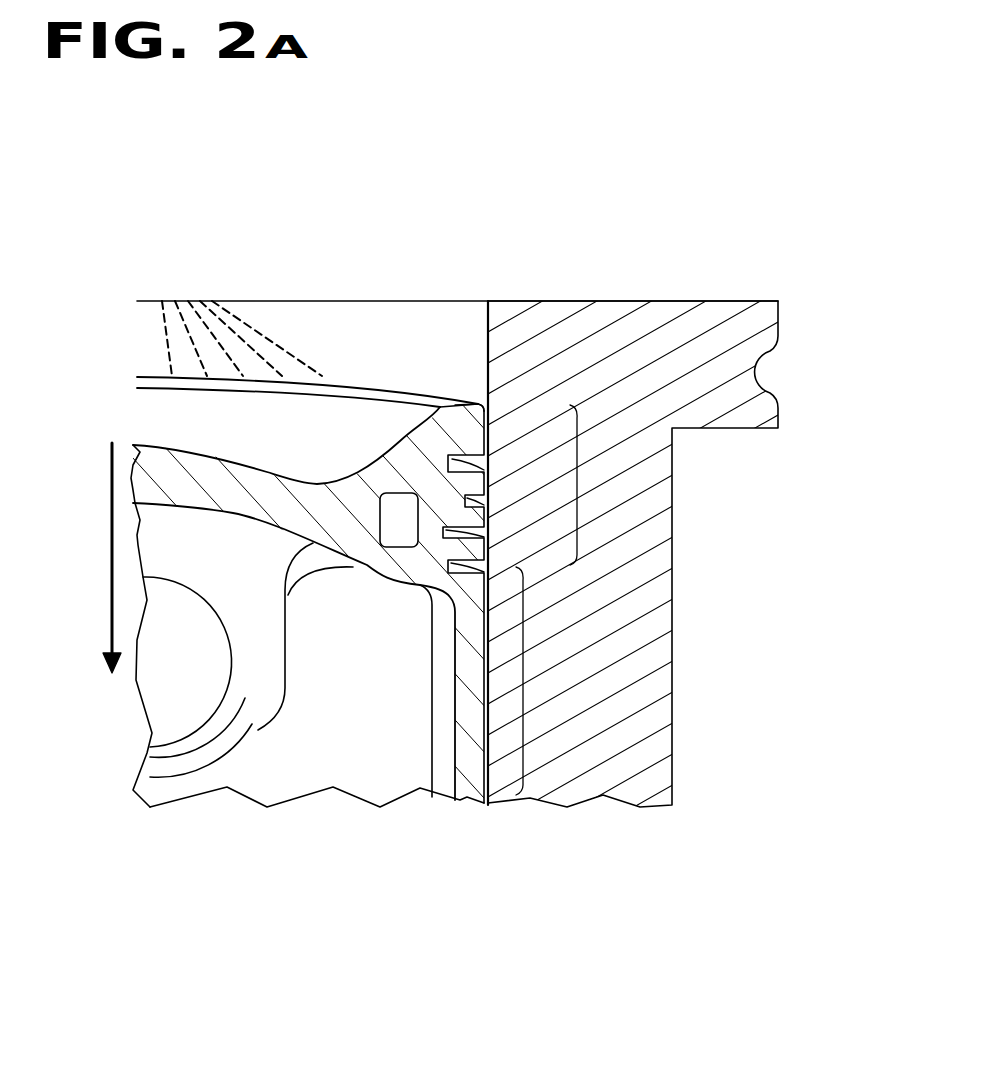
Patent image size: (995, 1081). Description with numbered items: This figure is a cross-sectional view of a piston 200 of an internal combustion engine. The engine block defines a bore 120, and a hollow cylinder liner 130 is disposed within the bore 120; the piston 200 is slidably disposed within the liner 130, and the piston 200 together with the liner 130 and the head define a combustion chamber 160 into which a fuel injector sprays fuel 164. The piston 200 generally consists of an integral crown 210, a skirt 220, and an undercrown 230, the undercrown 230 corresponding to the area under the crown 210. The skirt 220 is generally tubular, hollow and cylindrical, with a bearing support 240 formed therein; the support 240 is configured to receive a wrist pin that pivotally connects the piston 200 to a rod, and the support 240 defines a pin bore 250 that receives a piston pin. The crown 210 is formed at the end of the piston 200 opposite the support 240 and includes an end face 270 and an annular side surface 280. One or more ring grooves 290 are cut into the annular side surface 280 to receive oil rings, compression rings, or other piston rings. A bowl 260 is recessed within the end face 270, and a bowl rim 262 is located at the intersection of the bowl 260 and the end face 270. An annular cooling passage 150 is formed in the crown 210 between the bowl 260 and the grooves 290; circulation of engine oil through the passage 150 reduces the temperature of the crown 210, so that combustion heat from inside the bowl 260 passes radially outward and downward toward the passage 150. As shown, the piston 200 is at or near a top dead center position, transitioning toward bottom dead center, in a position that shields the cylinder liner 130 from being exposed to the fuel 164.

The bore 120 is at (487, 342).
The cylinder liner 130 is at (593, 394).
The annular cooling passage 150 is at (390, 508).
The combustion chamber 160 is at (291, 334).
The fuel 164 is at (259, 306).
The piston 200 is at (391, 852).
The crown 210 is at (577, 473).
The skirt 220 is at (524, 634).
The undercrown 230 is at (368, 578).
The bearing support 240 is at (282, 692).
The pin bore 250 is at (203, 692).
The bowl 260 is at (348, 420).
The bowl rim 262 is at (337, 395).
The end face 270 is at (420, 396).
The annular side surface 280 is at (488, 441).
The ring grooves 290 is at (480, 503).